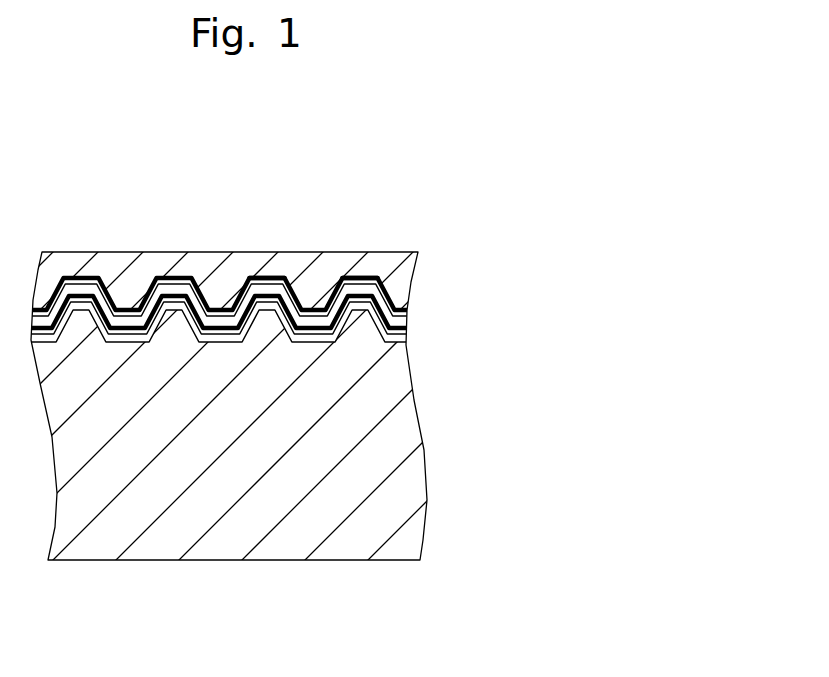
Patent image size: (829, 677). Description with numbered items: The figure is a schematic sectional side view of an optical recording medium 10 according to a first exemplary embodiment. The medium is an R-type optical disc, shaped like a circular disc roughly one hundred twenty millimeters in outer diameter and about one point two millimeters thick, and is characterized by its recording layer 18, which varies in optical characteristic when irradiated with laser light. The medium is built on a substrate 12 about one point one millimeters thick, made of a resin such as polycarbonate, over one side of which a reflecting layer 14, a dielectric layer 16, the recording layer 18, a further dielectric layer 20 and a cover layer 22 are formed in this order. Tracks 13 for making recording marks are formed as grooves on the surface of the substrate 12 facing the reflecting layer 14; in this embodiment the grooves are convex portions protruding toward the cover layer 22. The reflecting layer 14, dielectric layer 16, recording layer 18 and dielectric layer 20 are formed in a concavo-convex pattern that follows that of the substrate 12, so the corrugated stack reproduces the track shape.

The optical recording medium 10 is at (260, 191).
The substrate 12 is at (420, 403).
The tracks 13 is at (275, 272).
The reflecting layer 14 is at (407, 343).
The dielectric layer 16 is at (407, 333).
The recording layer 18 is at (407, 322).
The dielectric layer 20 is at (408, 307).
The cover layer 22 is at (420, 258).